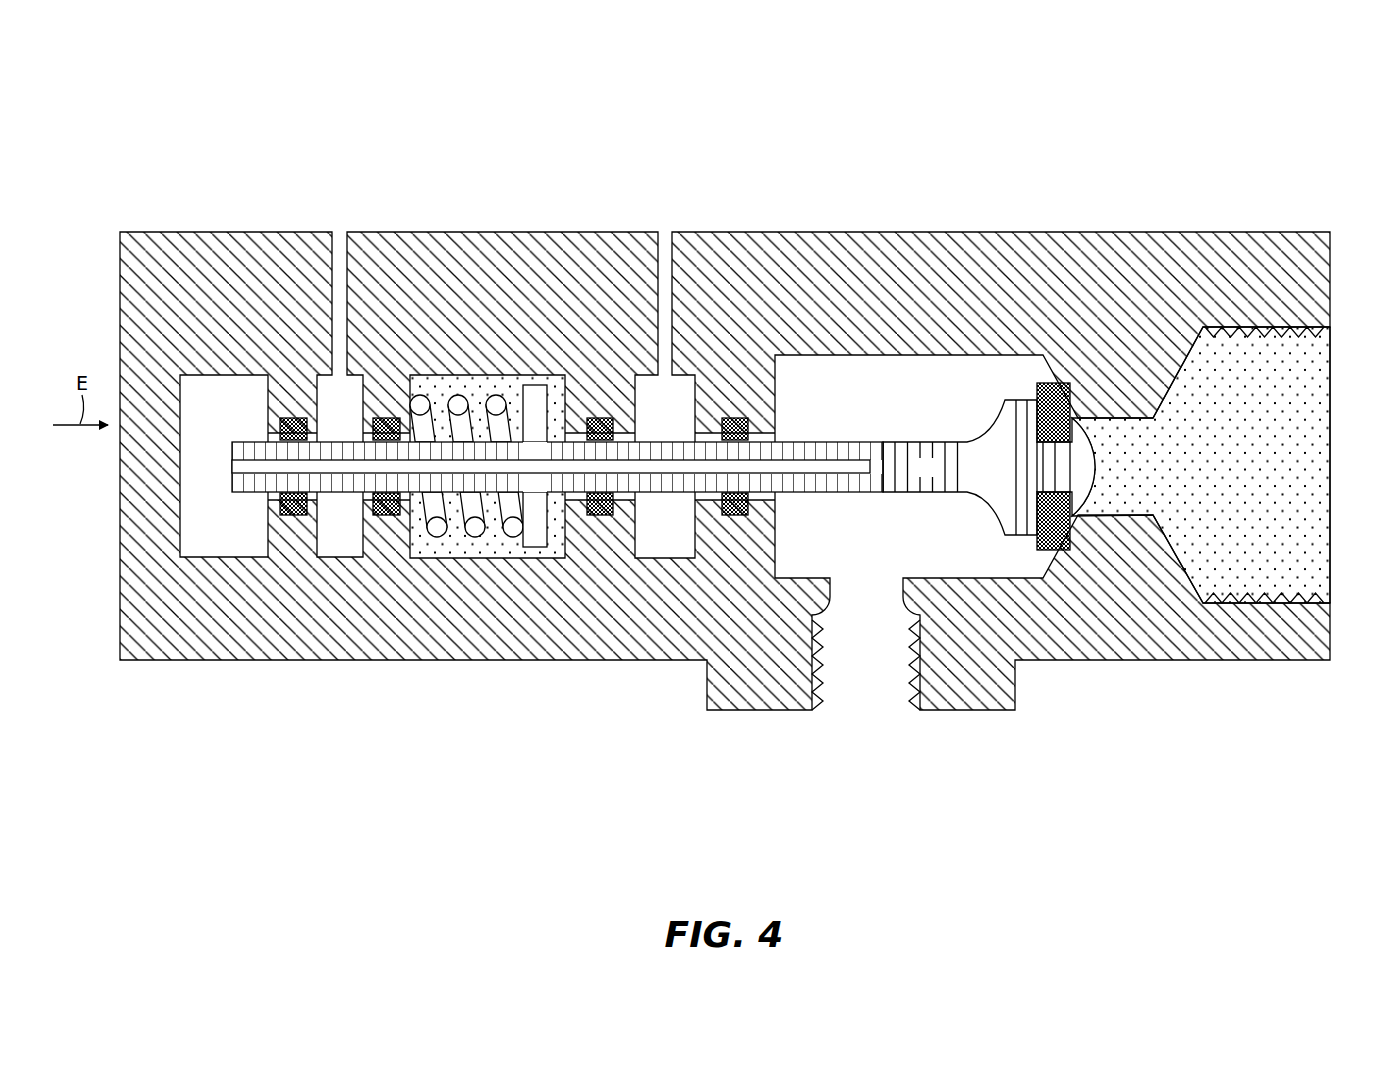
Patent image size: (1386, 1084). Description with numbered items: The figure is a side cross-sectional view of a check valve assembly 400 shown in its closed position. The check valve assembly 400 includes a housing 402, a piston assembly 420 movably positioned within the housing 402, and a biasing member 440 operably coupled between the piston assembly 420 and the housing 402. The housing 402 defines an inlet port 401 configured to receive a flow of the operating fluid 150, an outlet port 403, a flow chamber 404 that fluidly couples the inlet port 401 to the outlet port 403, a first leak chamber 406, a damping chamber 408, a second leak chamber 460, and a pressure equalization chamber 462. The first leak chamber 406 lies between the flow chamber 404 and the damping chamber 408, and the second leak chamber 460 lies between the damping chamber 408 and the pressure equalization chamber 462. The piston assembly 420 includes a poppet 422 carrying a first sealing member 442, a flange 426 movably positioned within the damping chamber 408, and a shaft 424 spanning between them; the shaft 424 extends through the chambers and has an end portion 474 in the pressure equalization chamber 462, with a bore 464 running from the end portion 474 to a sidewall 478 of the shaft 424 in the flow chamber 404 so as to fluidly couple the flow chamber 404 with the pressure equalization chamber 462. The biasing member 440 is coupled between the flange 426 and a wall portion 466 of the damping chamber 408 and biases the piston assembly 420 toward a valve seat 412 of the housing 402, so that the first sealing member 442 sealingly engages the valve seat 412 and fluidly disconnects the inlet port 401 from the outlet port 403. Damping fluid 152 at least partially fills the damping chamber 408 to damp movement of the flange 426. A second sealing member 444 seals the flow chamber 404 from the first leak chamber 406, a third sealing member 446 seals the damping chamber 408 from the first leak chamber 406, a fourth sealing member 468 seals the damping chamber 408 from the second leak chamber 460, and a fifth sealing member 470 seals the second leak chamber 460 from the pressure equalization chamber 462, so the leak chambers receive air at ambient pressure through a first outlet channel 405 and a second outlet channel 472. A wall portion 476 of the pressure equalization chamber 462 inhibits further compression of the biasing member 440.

The check valve assembly 400 is at (188, 92).
The housing 402 is at (1215, 232).
The inlet port 401 is at (1263, 456).
The operating fluid 150 is at (1292, 398).
The outlet port 403 is at (866, 690).
The flow chamber 404 is at (870, 392).
The first outlet channel 405 is at (665, 230).
The first leak chamber 406 is at (672, 392).
The damping chamber 408 is at (510, 386).
The valve seat 412 is at (1045, 557).
The piston assembly 420 is at (915, 477).
The poppet 422 is at (1005, 400).
The shaft 424 is at (830, 440).
The flange 426 is at (535, 547).
The biasing member 440 is at (456, 392).
The first sealing member 442 is at (1046, 383).
The second sealing member 444 is at (735, 417).
The third sealing member 446 is at (600, 417).
The second leak chamber 460 is at (342, 392).
The pressure equalization chamber 462 is at (237, 392).
The bore 464 is at (229, 466).
The wall portion 466 is at (418, 556).
The fourth sealing member 468 is at (386, 515).
The fifth sealing member 470 is at (293, 515).
The second outlet channel 472 is at (340, 230).
The end portion 474 is at (235, 480).
The wall portion 476 is at (188, 523).
The sidewall 478 is at (798, 494).
The damping fluid 152 is at (487, 548).